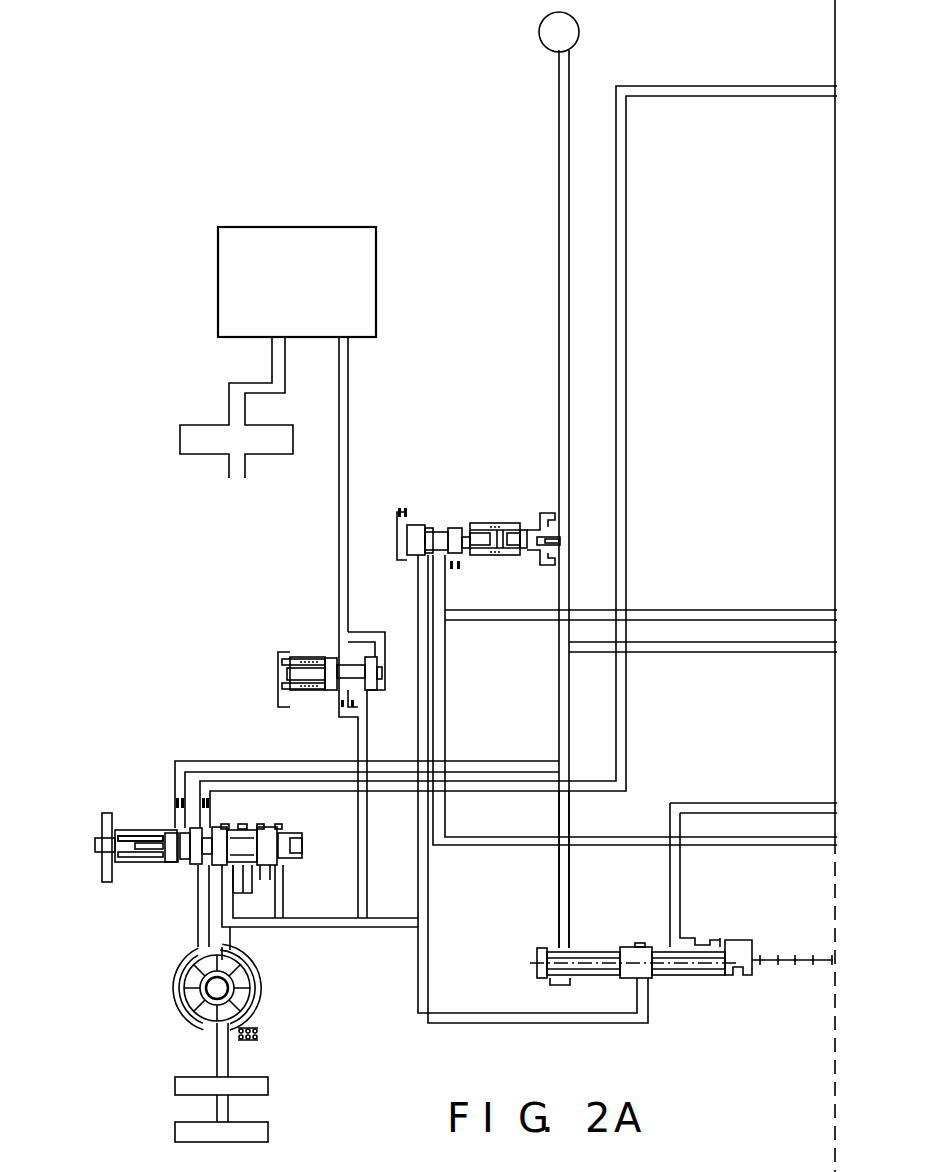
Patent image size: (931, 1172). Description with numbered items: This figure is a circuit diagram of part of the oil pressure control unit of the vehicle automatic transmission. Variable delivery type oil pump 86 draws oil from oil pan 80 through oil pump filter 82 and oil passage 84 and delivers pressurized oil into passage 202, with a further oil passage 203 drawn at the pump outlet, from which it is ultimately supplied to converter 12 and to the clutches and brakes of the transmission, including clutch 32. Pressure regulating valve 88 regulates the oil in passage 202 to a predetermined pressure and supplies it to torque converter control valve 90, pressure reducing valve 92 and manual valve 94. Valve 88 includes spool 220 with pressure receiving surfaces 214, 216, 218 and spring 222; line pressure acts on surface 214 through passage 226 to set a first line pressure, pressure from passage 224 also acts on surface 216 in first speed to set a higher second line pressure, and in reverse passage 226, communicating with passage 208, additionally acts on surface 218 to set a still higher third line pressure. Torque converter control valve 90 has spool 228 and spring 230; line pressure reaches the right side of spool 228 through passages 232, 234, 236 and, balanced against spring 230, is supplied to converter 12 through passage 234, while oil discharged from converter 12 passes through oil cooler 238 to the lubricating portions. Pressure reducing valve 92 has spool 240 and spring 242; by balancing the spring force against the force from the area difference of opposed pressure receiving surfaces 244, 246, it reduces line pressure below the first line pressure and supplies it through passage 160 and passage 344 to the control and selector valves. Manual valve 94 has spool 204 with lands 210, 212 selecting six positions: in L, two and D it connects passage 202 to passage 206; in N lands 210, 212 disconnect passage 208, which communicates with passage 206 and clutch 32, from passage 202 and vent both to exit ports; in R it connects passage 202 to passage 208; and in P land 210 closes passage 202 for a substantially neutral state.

The converter 12 is at (288, 235).
The clutch 32 is at (546, 48).
The oil pan 80 is at (268, 1132).
The oil pump filter 82 is at (265, 1088).
The oil passage 84 is at (228, 1058).
The variable delivery type oil pump 86 is at (262, 989).
The pressure regulating valve 88 is at (135, 870).
The torque converter control valve 90 is at (307, 692).
The pressure reducing valve 92 is at (510, 520).
The manual valve 94 is at (706, 978).
The passage 160 is at (445, 693).
The passage 202 is at (418, 754).
The pump discharge passage 203 is at (558, 115).
The spool 204 is at (664, 975).
The passage 206 is at (680, 894).
The passage 208 is at (570, 876).
The land 210 is at (628, 946).
The land 212 is at (530, 947).
The pressure receiving surface 214 is at (272, 829).
The pressure receiving surface 216 is at (216, 829).
The pressure receiving surface 218 is at (197, 863).
The spool 220 is at (296, 854).
The spring 222 is at (147, 837).
The passage 224 is at (628, 750).
The passage 226 is at (206, 761).
The spool 228 is at (370, 678).
The spring 230 is at (297, 657).
The passage 232 is at (365, 860).
The passage 234 is at (339, 571).
The passage 236 is at (372, 633).
The oil cooler 238 is at (262, 447).
The spool 240 is at (453, 540).
The spring 242 is at (490, 558).
The pressure receiving surface 244 is at (420, 524).
The pressure receiving surface 246 is at (480, 533).
The passage 344 is at (515, 620).